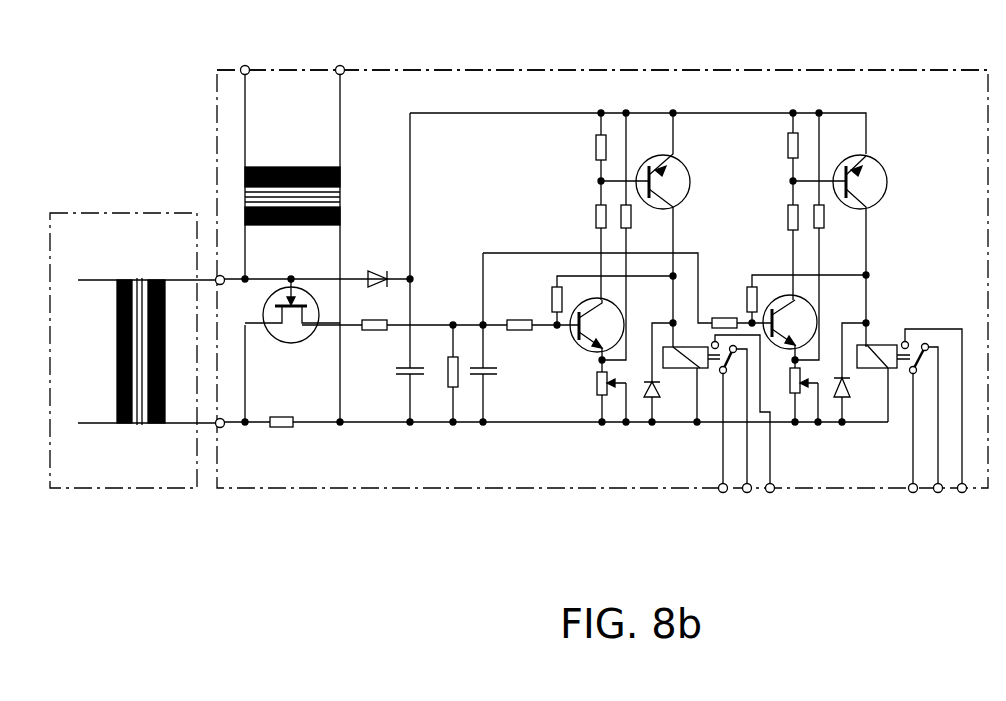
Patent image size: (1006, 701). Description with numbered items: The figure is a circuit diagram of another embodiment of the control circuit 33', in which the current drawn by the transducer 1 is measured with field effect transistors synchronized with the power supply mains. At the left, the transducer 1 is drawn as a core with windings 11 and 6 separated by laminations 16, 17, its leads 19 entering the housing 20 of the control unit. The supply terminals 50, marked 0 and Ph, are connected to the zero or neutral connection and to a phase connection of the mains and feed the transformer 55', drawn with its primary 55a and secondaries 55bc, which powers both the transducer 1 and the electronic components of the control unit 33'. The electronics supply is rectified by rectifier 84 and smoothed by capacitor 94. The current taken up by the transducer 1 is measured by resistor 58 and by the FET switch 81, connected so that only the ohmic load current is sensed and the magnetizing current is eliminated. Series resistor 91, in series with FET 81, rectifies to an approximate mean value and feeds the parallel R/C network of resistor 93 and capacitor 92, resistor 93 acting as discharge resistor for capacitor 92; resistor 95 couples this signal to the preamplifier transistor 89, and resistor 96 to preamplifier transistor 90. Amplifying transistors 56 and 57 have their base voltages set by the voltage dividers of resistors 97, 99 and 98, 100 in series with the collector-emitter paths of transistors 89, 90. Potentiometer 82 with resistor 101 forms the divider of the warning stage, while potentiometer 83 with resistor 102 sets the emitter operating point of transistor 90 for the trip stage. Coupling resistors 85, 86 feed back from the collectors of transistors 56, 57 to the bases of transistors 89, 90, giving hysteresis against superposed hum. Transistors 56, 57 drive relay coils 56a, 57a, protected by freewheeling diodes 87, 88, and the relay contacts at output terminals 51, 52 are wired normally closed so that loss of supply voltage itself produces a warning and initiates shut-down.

The transducer 1 is at (148, 492).
The coil 6 is at (165, 358).
The coil 11 is at (117, 357).
The core lamination 16 is at (141, 280).
The core lamination 17 is at (138, 425).
The connecting leads 19 is at (88, 280).
The evaluation circuit housing 20 is at (212, 240).
The control circuit 33' is at (602, 43).
The terminals 50 is at (292, 230).
The zero terminal 0 is at (241, 56).
The phase terminal Ph is at (338, 56).
The transformer 55' is at (255, 195).
The light emitter 55a is at (292, 166).
The light receiver 55bc is at (286, 204).
The resistor 58 is at (283, 430).
The field effect transistor switch 81 is at (311, 338).
The potentiometer 82 is at (600, 383).
The potentiometer 83 is at (791, 391).
The rectifier 84 is at (383, 264).
The coupling resistor 85 is at (553, 299).
The coupling resistor 86 is at (750, 300).
The freewheeling diode 87 is at (657, 393).
The freewheeling diode 88 is at (846, 384).
The preamplifier transistor 89 is at (619, 336).
The preamplifier transistor 90 is at (814, 333).
The series resistor 91 is at (376, 331).
The capacitor 92 is at (494, 375).
The resistor 93 is at (446, 382).
The capacitor 94 is at (401, 376).
The resistor 95 is at (521, 342).
The resistor 96 is at (738, 310).
The resistor 97 is at (596, 214).
The resistor 98 is at (788, 214).
The resistor 99 is at (596, 151).
The resistor 100 is at (788, 151).
The resistor 101 is at (631, 218).
The resistor 102 is at (823, 229).
The amplifying transistor 56 is at (690, 182).
The amplifying transistor 57 is at (880, 204).
The relay coil 56a is at (715, 409).
The relay coil 57a is at (871, 340).
The relay output terminals 51 is at (747, 507).
The relay output terminals 52 is at (938, 507).